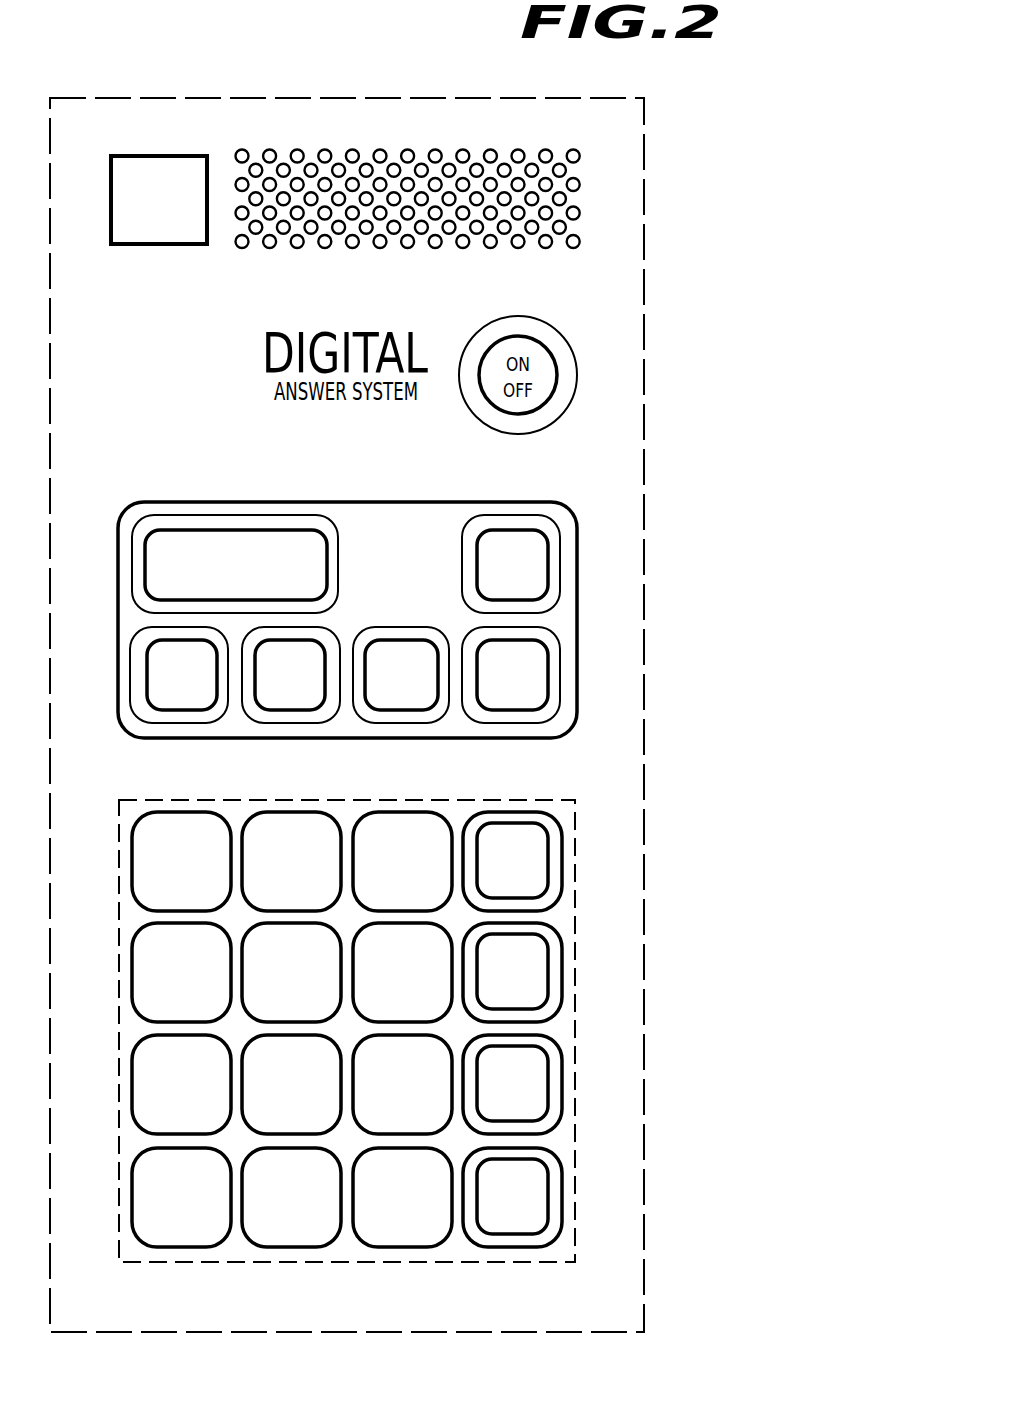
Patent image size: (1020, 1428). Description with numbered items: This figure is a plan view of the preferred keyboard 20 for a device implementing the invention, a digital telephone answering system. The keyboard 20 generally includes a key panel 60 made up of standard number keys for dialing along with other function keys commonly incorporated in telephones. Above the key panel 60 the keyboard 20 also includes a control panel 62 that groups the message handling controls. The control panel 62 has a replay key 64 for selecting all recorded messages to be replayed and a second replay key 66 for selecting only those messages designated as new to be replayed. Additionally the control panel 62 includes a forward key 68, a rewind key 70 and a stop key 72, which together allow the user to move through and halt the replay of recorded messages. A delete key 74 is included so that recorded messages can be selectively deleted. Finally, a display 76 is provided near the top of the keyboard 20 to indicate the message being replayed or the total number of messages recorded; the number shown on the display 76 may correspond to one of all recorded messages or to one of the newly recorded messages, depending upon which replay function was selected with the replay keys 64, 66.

The keyboard 20 is at (644, 256).
The display 76 is at (162, 155).
The control panel 62 is at (339, 502).
The replay key 66 is at (186, 528).
The replay key 64 is at (537, 543).
The rewind key 70 is at (147, 665).
The stop key 72 is at (315, 656).
The forward key 68 is at (420, 650).
The delete key 74 is at (537, 653).
The key panel 60 is at (119, 893).